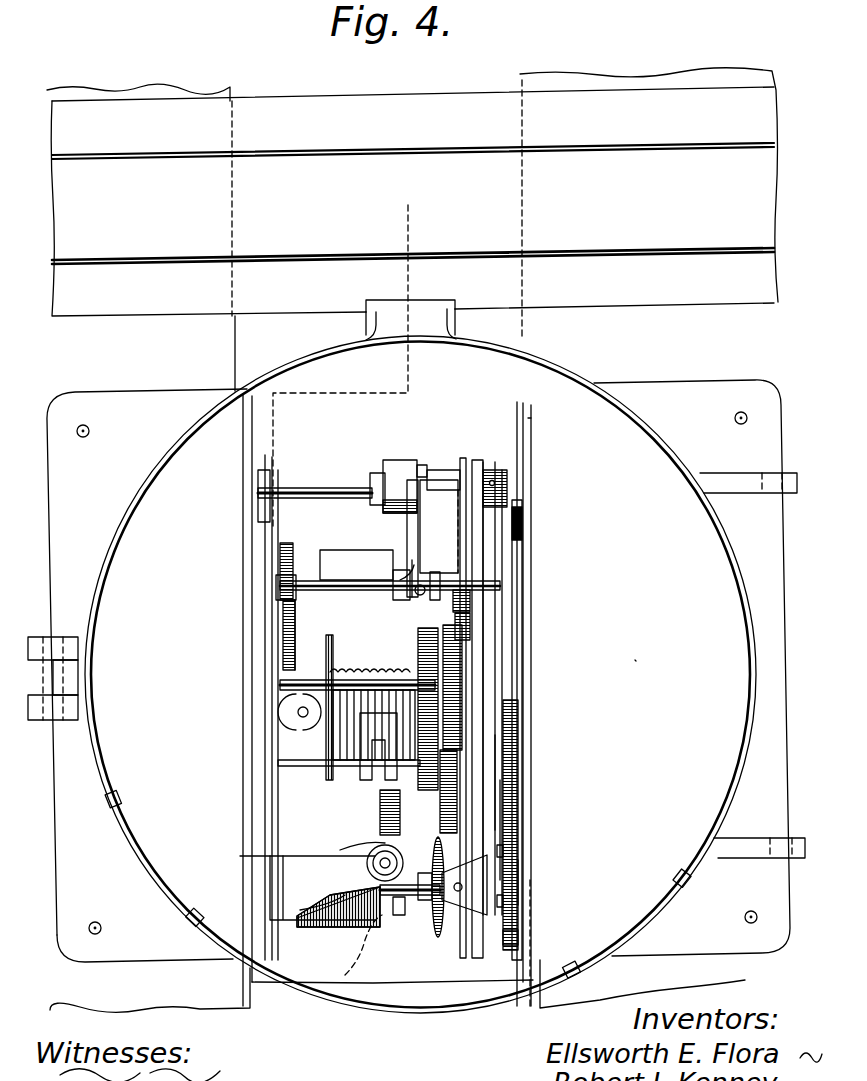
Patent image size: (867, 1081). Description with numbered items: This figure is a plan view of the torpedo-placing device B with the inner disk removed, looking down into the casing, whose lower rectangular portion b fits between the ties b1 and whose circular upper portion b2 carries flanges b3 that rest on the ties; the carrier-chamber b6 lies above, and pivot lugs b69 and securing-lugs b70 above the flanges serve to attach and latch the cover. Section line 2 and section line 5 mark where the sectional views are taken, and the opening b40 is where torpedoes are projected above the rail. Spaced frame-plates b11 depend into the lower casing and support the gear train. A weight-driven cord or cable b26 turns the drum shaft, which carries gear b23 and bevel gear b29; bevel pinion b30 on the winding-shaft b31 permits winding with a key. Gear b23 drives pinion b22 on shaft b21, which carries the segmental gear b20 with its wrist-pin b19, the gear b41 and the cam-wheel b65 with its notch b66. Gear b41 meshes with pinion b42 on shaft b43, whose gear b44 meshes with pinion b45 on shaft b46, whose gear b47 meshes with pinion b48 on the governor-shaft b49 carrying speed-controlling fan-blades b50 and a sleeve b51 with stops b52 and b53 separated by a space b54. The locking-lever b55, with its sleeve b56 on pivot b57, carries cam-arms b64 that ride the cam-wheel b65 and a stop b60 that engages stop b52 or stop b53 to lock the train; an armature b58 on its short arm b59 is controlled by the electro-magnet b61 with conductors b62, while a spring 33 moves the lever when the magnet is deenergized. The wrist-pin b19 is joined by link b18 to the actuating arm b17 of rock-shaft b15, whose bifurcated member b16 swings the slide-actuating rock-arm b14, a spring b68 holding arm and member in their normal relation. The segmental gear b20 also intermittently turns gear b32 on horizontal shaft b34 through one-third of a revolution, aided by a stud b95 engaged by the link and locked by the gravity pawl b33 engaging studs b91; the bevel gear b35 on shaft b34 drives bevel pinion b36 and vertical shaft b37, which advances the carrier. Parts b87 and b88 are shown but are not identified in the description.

The device B is at (173, 381).
The section line 2 is at (357, 214).
The section line 5 is at (564, 1028).
The spring 33 is at (375, 857).
The lower casing portion b is at (530, 418).
The ties b1 is at (397, 986).
The upper casing portion b2 is at (560, 369).
The flanges b3 is at (418, 671).
The carrier-chamber b6 is at (640, 674).
The frame-plates b11 is at (262, 563).
The slide-actuating rock-arm b14 is at (420, 573).
The rock-shaft b15 is at (325, 490).
The bifurcated member b16 is at (445, 490).
The actuating arm b17 is at (503, 492).
The link b18 is at (522, 592).
The wrist-pin b19 is at (512, 790).
The segmental gear b20 is at (510, 742).
The shaft b21 is at (302, 772).
The pinion b22 is at (405, 800).
The gear b23 is at (470, 620).
The cord or cable b26 is at (397, 668).
The bevel gear b29 is at (331, 665).
The bevel pinion b30 is at (300, 732).
The winding-shaft b31 is at (298, 712).
The intermittently actuated gear b32 is at (518, 881).
The locking-pawl b33 is at (500, 826).
The horizontal shaft b34 is at (403, 915).
The bevel gear b35 is at (438, 938).
The bevel pinion b36 is at (447, 872).
The vertical shaft b37 is at (462, 895).
The opening b40 is at (430, 310).
The gear b41 is at (450, 790).
The pinion b42 is at (431, 668).
The shaft b43 is at (312, 700).
The gear b44 is at (462, 692).
The pinion b45 is at (468, 607).
The shaft b46 is at (297, 655).
The gear b47 is at (285, 640).
The pinion b48 is at (283, 592).
The governor-shaft b49 is at (300, 582).
The fan-blades b50 is at (360, 582).
The sleeve b51 is at (432, 590).
The stop b52 is at (405, 596).
The stop b53 is at (400, 585).
The space b54 is at (403, 578).
The locking-lever b55 is at (380, 848).
The sleeve b56 is at (368, 862).
The pivot b57 is at (398, 866).
The armature b58 is at (348, 930).
The short arm b59 is at (345, 900).
The stop b60 is at (522, 528).
The electro-magnet b61 is at (318, 928).
The conductors b62 is at (380, 975).
The cam-arms b64 is at (395, 765).
The cam-wheel b65 is at (378, 780).
The notch b66 is at (300, 855).
The spring b68 is at (422, 466).
The pivot lugs b69 is at (744, 490).
The securing-lugs b70 is at (44, 662).
The block b87 is at (402, 480).
The rod b88 is at (410, 548).
The studs b91 is at (522, 936).
The stud b95 is at (508, 862).